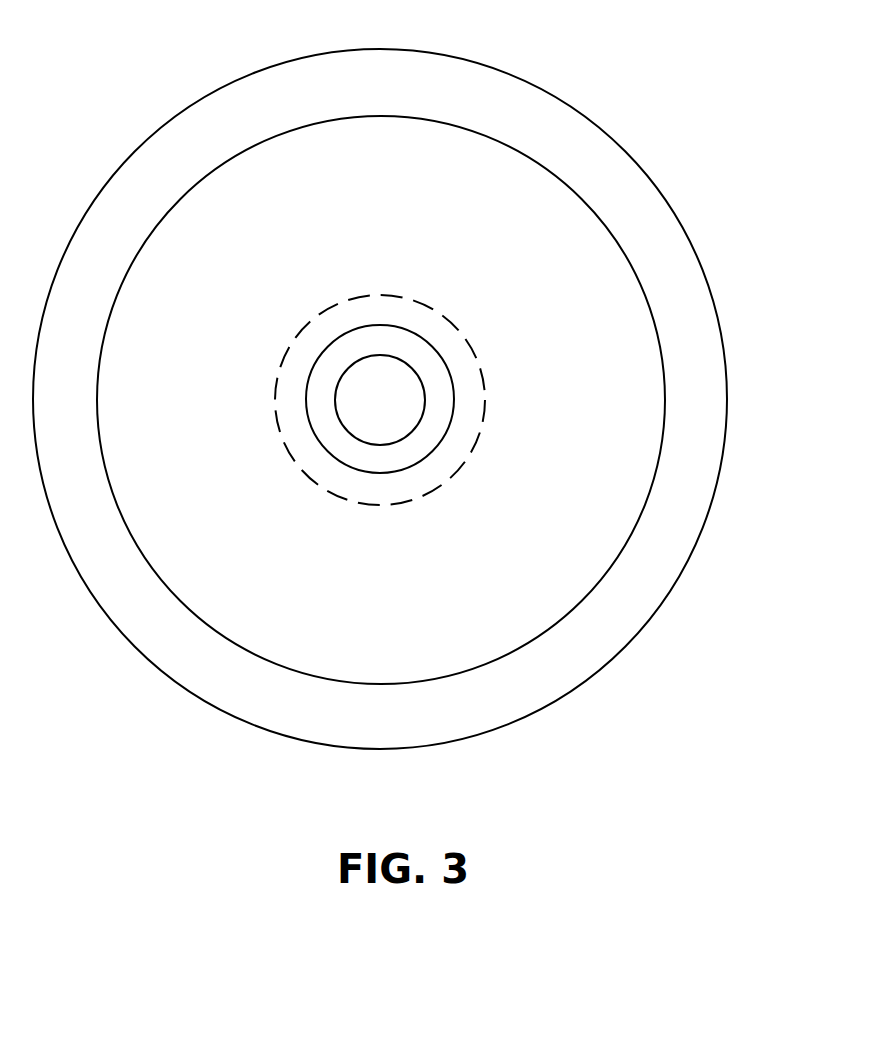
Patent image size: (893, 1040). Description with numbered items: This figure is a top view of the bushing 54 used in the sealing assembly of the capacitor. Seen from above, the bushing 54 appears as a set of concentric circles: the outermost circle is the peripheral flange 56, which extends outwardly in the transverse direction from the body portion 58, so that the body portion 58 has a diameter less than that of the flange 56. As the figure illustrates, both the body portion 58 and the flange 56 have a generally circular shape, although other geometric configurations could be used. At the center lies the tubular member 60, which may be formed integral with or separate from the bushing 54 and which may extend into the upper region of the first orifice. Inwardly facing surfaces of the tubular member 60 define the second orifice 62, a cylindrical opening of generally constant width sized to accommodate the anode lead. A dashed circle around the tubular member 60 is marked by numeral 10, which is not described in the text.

The bushing 54 is at (397, 382).
The peripheral flange 56 is at (705, 450).
The body portion 58 is at (612, 296).
The sensing region 10 is at (470, 388).
The tubular member 60 is at (408, 455).
The second orifice 62 is at (380, 396).